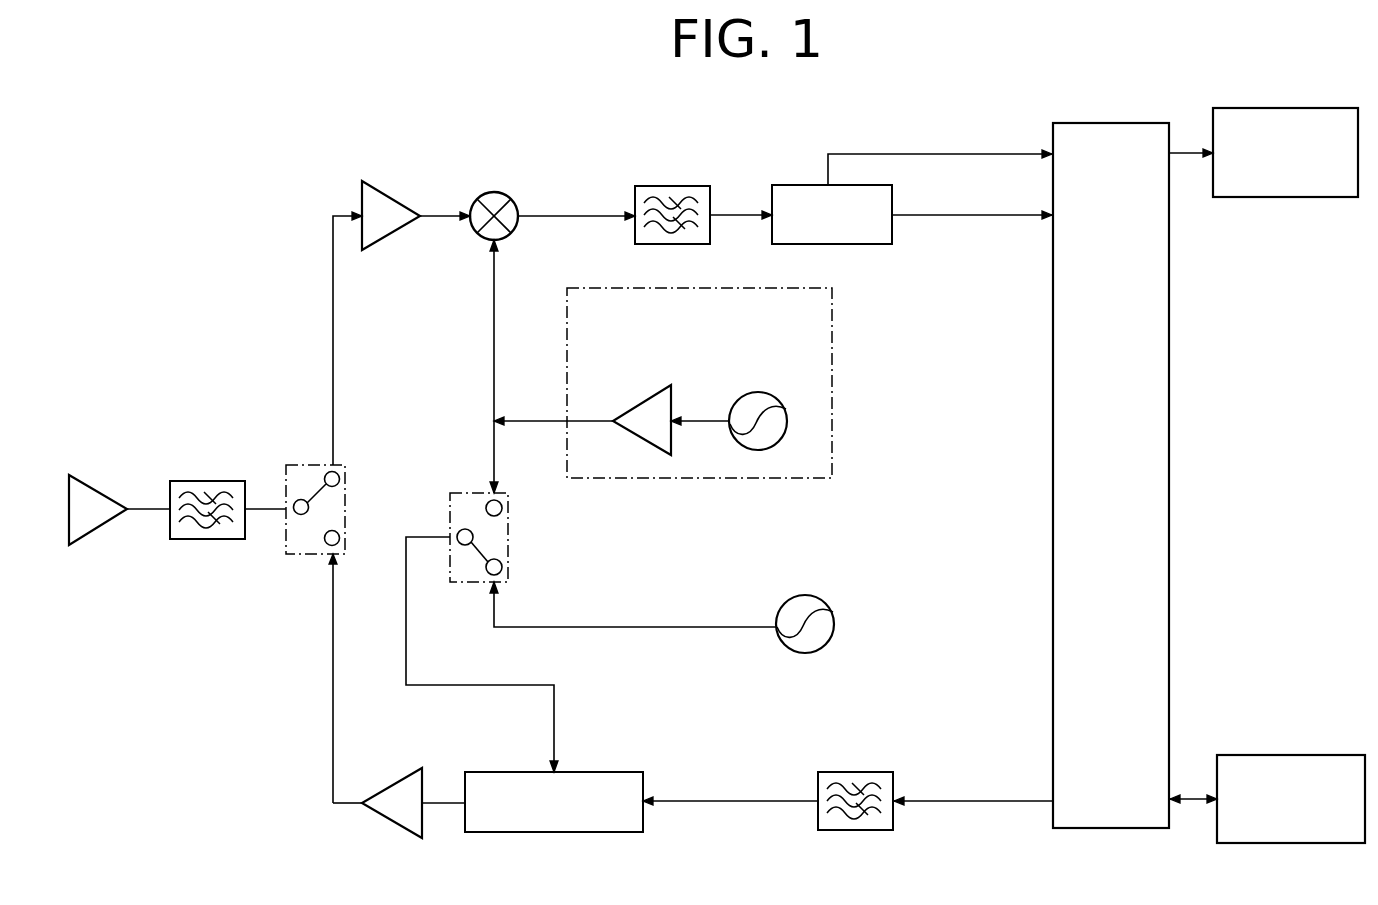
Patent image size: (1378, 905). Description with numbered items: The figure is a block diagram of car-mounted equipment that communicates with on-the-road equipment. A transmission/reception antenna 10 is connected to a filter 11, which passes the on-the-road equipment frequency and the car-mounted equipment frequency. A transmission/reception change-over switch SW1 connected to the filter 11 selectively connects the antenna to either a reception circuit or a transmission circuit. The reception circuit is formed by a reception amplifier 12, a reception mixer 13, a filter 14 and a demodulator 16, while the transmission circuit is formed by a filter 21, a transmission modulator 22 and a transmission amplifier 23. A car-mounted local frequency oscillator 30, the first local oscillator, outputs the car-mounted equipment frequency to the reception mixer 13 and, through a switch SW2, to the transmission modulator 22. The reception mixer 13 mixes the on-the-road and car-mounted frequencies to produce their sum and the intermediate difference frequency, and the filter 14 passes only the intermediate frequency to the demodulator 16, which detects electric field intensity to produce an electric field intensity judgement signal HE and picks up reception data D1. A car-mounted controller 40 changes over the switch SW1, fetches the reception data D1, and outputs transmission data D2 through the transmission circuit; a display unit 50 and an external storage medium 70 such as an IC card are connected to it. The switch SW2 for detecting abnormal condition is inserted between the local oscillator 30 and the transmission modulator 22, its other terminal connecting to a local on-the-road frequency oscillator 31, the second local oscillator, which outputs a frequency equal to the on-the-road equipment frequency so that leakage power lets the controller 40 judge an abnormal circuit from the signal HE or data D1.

The transmission/reception antenna 10 is at (100, 492).
The filter 11 is at (205, 481).
The transmission/reception change-over switch SW1 is at (316, 465).
The reception amplifier 12 is at (391, 198).
The reception mixer 13 is at (494, 192).
The filter 14 is at (665, 186).
The demodulator 16 is at (795, 185).
The electric field intensity judgement signal HE is at (935, 154).
The reception data D1 is at (933, 214).
The car-mounted controller 40 is at (1170, 452).
The display unit 50 is at (1295, 108).
The external storage medium 70 is at (1288, 755).
The transmission data D2 is at (950, 801).
The filter 21 is at (848, 772).
The transmission modulator 22 is at (583, 772).
The transmission amplifier 23 is at (393, 785).
The switch for detecting abnormal condition SW2 is at (480, 492).
The car-mounted local frequency oscillator 30 is at (832, 382).
The local on-the-road frequency oscillator 31 is at (800, 595).